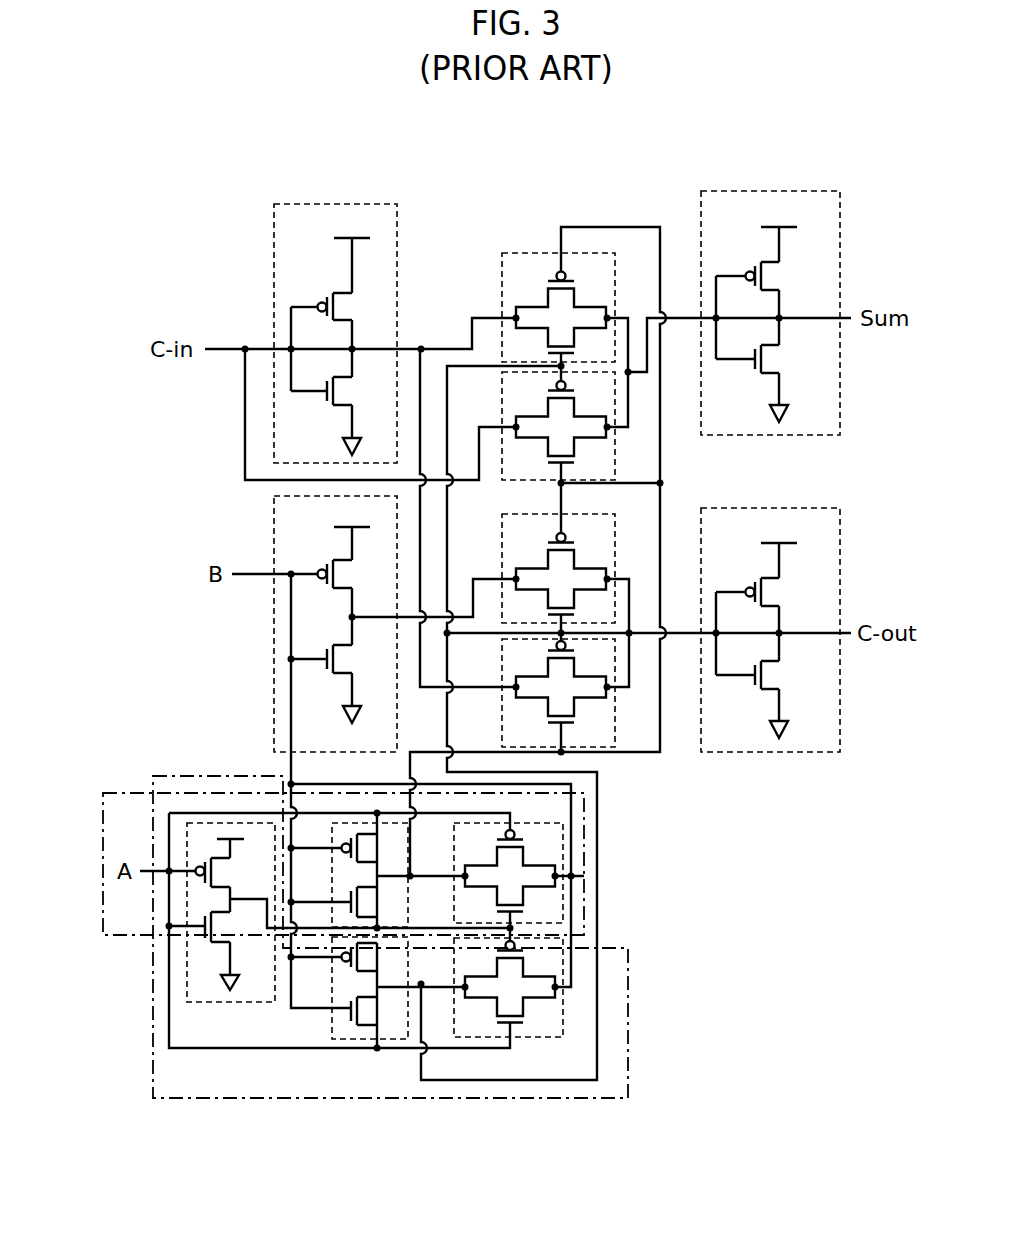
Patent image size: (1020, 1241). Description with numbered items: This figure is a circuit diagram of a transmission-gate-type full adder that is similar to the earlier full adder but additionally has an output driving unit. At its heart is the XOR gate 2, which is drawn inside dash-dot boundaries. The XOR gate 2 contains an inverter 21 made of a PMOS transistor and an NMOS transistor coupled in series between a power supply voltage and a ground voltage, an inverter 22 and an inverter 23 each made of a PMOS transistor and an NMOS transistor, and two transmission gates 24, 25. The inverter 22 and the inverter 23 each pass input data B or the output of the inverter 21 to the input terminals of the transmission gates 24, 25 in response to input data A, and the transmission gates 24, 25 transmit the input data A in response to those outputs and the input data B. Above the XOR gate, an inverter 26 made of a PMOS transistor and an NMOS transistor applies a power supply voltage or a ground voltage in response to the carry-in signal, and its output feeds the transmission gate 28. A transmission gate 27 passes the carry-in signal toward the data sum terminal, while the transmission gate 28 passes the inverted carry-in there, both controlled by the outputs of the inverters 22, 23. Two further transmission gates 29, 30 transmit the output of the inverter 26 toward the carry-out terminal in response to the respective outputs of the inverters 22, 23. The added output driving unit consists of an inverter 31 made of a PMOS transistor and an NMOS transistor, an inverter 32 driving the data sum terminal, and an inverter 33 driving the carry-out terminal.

The XOR gate 2 is at (153, 1055).
The inverter 21 is at (228, 1003).
The inverter 22 is at (410, 830).
The inverter 23 is at (408, 940).
The transmission gate 24 is at (513, 822).
The transmission gate 25 is at (513, 1037).
The inverter 26 is at (357, 205).
The transmission gate 27 is at (520, 252).
The transmission gate 28 is at (497, 480).
The transmission gate 29 is at (497, 520).
The transmission gate 30 is at (612, 748).
The inverter 31 is at (274, 655).
The inverter 32 is at (813, 191).
The inverter 33 is at (813, 508).